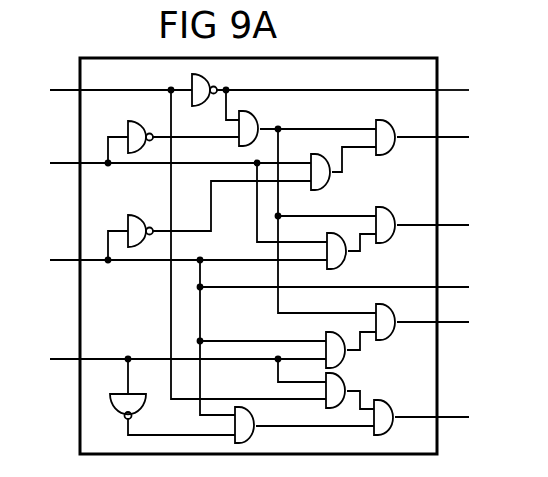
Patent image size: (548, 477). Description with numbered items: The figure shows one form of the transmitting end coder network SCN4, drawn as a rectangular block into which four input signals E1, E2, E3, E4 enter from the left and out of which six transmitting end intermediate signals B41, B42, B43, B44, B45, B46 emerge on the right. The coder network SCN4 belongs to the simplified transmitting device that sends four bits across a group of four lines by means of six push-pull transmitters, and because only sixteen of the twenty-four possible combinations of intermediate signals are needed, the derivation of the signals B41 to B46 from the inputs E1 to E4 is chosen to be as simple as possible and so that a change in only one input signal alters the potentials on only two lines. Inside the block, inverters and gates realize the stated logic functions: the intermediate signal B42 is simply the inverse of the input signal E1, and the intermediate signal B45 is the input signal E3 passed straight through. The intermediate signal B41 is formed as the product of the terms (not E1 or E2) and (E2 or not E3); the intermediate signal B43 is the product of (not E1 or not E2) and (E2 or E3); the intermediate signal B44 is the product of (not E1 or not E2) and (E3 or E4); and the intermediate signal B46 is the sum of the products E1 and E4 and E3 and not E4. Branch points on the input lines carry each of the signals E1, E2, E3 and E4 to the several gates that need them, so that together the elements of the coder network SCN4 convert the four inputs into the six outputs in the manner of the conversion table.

The transmitting end coder network SCN4 is at (414, 58).
The input signal E1 is at (173, 236).
The input signal E2 is at (174, 189).
The input signal E3 is at (174, 323).
The input signal E4 is at (173, 368).
The transmitting end intermediate signal B41 is at (459, 137).
The transmitting end intermediate signal B42 is at (479, 90).
The transmitting end intermediate signal B43 is at (459, 226).
The transmitting end intermediate signal B44 is at (459, 322).
The transmitting end intermediate signal B45 is at (361, 287).
The transmitting end intermediate signal B46 is at (458, 418).